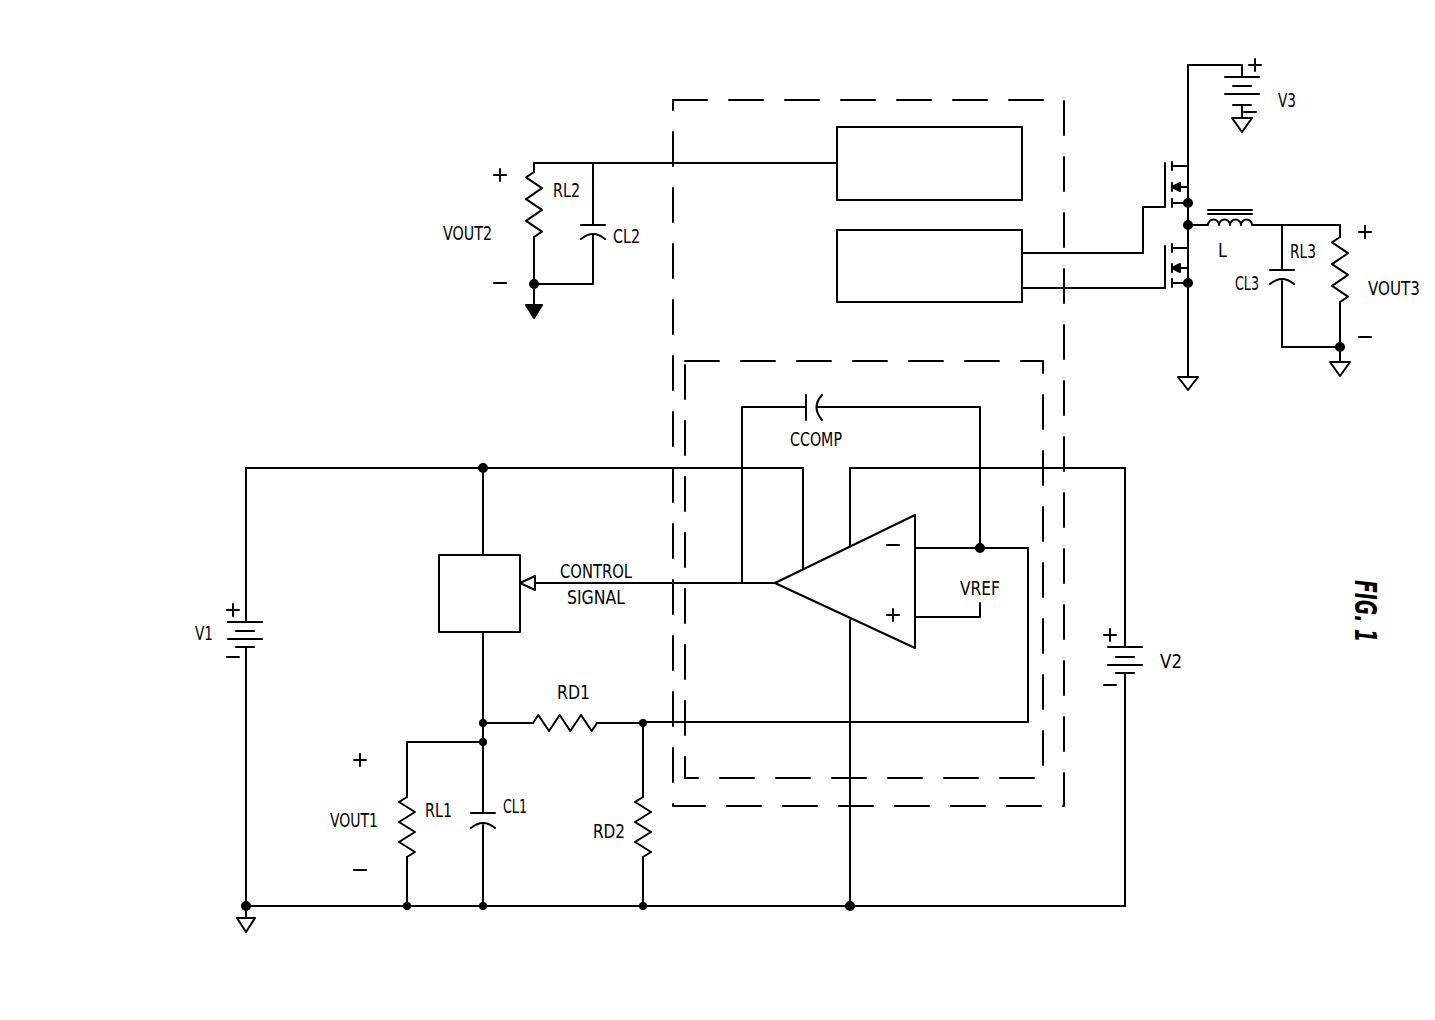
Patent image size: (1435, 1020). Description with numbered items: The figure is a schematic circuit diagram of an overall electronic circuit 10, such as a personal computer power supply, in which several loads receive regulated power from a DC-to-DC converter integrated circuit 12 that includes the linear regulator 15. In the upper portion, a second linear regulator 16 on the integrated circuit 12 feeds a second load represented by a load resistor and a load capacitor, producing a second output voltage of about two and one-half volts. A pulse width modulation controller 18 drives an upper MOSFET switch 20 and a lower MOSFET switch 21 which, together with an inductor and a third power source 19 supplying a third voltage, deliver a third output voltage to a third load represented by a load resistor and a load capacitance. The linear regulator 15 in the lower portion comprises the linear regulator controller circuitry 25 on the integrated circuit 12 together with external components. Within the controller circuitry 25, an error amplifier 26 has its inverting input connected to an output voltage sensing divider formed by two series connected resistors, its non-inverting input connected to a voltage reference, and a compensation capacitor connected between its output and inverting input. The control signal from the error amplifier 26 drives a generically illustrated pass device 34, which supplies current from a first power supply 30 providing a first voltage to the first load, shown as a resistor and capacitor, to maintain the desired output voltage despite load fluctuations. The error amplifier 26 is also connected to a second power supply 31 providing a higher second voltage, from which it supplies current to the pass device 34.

The electronic circuit 10 is at (266, 206).
The integrated circuit 12 is at (947, 100).
The linear regulator 15 is at (628, 443).
The second linear regulator 16 is at (1018, 150).
The pulse width modulation controller 18 is at (1018, 245).
The third power source 19 is at (1263, 108).
The upper MOSFET switch 20 is at (1163, 188).
The lower MOSFET switch 21 is at (1152, 288).
The linear regulator controller circuitry 25 is at (1043, 412).
The error amplifier 26 is at (903, 638).
The first power supply 30 is at (257, 617).
The second power supply 31 is at (1143, 636).
The pass device 34 is at (439, 596).